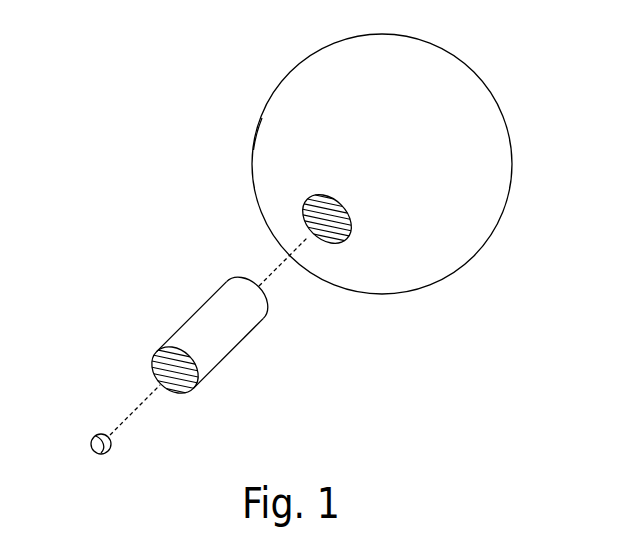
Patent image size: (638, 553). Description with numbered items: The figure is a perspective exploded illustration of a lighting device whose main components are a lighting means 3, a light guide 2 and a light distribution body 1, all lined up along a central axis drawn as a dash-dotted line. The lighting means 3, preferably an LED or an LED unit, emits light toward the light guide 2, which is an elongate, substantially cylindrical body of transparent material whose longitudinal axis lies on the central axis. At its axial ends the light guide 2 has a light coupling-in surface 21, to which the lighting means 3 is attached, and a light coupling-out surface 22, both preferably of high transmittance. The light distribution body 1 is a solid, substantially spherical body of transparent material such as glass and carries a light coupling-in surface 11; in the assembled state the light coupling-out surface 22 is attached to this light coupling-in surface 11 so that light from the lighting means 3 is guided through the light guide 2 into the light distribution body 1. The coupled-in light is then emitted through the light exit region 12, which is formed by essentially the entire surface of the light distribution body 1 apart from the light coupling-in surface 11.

The light distribution body 1 is at (278, 53).
The light exit region 12 is at (290, 134).
The light coupling-in surface 11 is at (303, 210).
The light guide 2 is at (192, 314).
The light coupling-in surface 21 is at (152, 360).
The light coupling-out surface 22 is at (263, 298).
The lighting means 3 is at (98, 434).